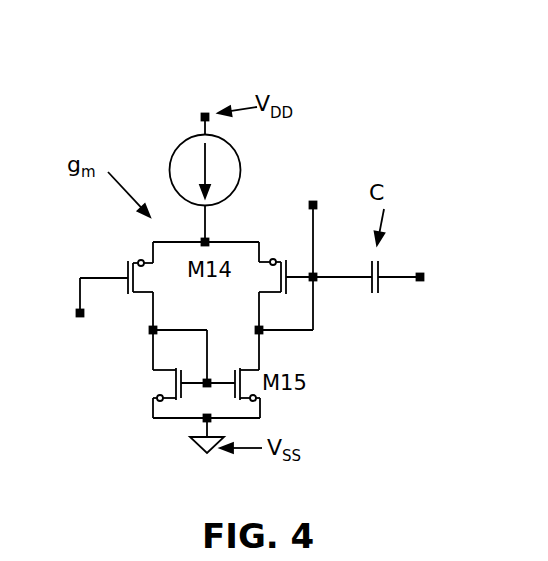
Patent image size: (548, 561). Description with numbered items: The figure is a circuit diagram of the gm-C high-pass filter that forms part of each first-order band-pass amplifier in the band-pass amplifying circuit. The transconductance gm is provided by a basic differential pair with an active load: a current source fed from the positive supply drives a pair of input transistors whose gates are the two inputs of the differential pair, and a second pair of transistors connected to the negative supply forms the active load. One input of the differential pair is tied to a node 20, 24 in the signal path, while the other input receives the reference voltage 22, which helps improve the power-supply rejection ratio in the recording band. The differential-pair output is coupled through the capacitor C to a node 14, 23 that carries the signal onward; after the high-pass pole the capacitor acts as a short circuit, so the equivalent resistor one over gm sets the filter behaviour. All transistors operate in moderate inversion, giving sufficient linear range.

The output of preamplifier 14 is at (396, 332).
The output node 23 is at (415, 299).
The input node 20 is at (366, 216).
The input node 24 is at (320, 180).
The reference voltage 22 is at (93, 324).